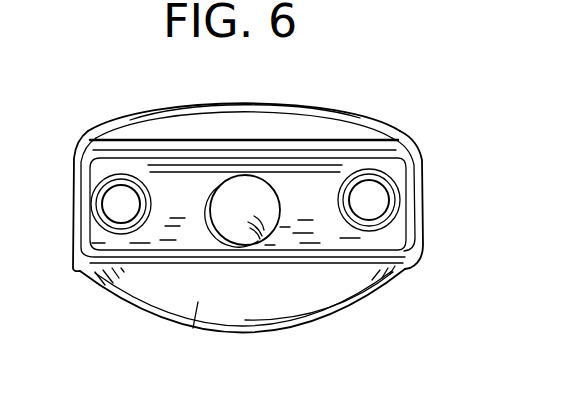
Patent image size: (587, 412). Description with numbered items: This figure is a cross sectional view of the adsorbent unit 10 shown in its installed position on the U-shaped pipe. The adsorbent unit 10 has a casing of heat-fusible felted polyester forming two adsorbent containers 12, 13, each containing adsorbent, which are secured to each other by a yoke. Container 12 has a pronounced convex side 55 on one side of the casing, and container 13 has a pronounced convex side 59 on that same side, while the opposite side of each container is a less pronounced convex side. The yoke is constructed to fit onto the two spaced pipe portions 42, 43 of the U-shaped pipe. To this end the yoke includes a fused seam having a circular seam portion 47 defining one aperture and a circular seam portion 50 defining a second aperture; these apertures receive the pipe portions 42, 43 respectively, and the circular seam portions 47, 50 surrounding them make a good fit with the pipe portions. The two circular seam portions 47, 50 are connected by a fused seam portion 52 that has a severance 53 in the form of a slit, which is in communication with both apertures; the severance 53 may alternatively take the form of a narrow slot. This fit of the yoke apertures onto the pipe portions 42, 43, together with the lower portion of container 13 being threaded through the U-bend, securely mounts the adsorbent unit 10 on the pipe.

The adsorbent unit 10 is at (312, 90).
The adsorbent container 12 is at (303, 328).
The adsorbent container 13 is at (340, 109).
The pipe portion 42 is at (417, 190).
The pipe portion 43 is at (72, 224).
The circular seam portion 47 is at (394, 223).
The circular seam portion 50 is at (72, 194).
The fused seam portion 52 is at (278, 171).
The severance 53 is at (176, 170).
The pronounced convex side 55 is at (190, 332).
The pronounced convex side 59 is at (222, 108).